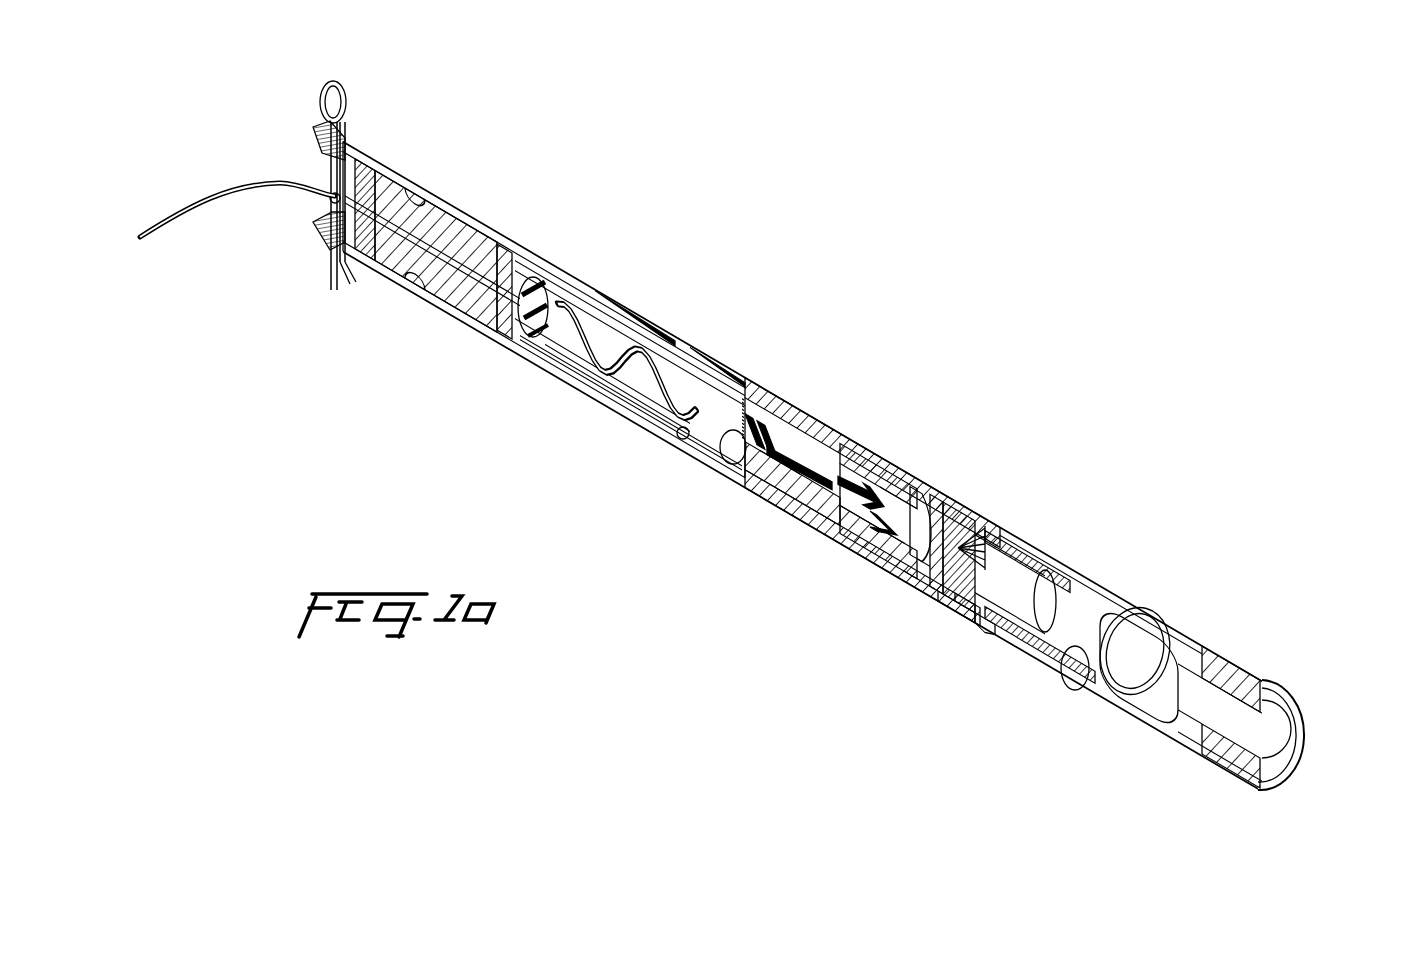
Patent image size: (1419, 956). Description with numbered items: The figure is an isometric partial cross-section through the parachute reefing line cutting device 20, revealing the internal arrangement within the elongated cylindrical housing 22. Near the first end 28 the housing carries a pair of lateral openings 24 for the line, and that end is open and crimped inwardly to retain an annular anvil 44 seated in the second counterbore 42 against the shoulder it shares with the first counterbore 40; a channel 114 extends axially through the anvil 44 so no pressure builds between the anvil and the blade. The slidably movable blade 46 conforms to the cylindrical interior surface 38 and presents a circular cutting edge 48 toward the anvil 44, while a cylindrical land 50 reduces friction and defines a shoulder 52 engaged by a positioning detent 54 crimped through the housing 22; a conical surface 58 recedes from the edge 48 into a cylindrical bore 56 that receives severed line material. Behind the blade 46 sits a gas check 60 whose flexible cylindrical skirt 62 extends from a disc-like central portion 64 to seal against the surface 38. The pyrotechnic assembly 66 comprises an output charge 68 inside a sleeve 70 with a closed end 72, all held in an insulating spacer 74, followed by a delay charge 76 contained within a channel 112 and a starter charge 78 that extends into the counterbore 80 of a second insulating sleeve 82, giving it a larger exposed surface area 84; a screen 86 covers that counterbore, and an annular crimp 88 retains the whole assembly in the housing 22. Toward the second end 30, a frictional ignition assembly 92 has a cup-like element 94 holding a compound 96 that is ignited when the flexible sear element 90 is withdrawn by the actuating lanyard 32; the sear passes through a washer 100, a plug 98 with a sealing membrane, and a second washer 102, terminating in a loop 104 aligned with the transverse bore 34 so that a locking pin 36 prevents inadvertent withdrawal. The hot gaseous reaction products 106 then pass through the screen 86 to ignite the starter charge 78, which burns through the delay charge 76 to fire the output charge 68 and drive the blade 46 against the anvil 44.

The parachute reefing line cutting device 20 is at (688, 318).
The housing 22 is at (777, 423).
The lateral openings 24 is at (1117, 693).
The first end 28 is at (1303, 731).
The second end 30 is at (318, 138).
The actuating lanyard 32 is at (176, 234).
The transverse bore 34 is at (345, 142).
The locking pin 36 is at (345, 93).
The interior surface 38 is at (671, 437).
The first counterbore 40 is at (1187, 731).
The second counterbore 42 is at (1238, 770).
The annular anvil 44 is at (1218, 665).
The blade 46 is at (950, 590).
The circular cutting edge 48 is at (1078, 648).
The cylindrical land 50 is at (1017, 625).
The shoulder 52 is at (986, 530).
The positioning detent 54 is at (980, 617).
The cylindrical bore 56 is at (1035, 563).
The conical surface 58 is at (1073, 598).
The gas check 60 is at (933, 495).
The cylindrical skirt 62 is at (920, 578).
The disc-like central portion 64 is at (950, 513).
The pyrotechnic assembly 66 is at (803, 468).
The output charge 68 is at (850, 500).
The sleeve 70 is at (885, 520).
The closed end 72 is at (920, 498).
The insulating spacer 74 is at (840, 488).
The delay charge 76 is at (826, 445).
The starter charge 78 is at (757, 414).
The counterbore 80 is at (741, 398).
The second insulating sleeve 82 is at (791, 396).
The exposed surface area 84 is at (707, 432).
The screen 86 is at (744, 440).
The annular crimp 88 is at (733, 477).
The flexible sear element 90 is at (660, 410).
The frictional ignition assembly 92 is at (550, 344).
The cup-like element 94 is at (549, 318).
The compound 96 is at (531, 296).
The plug 98 is at (460, 298).
The washer 100 is at (504, 257).
The second washer 102 is at (384, 183).
The loop 104 is at (326, 196).
The gaseous reaction products 106 is at (601, 324).
The channel 112 is at (797, 470).
The channel 114 is at (1280, 717).